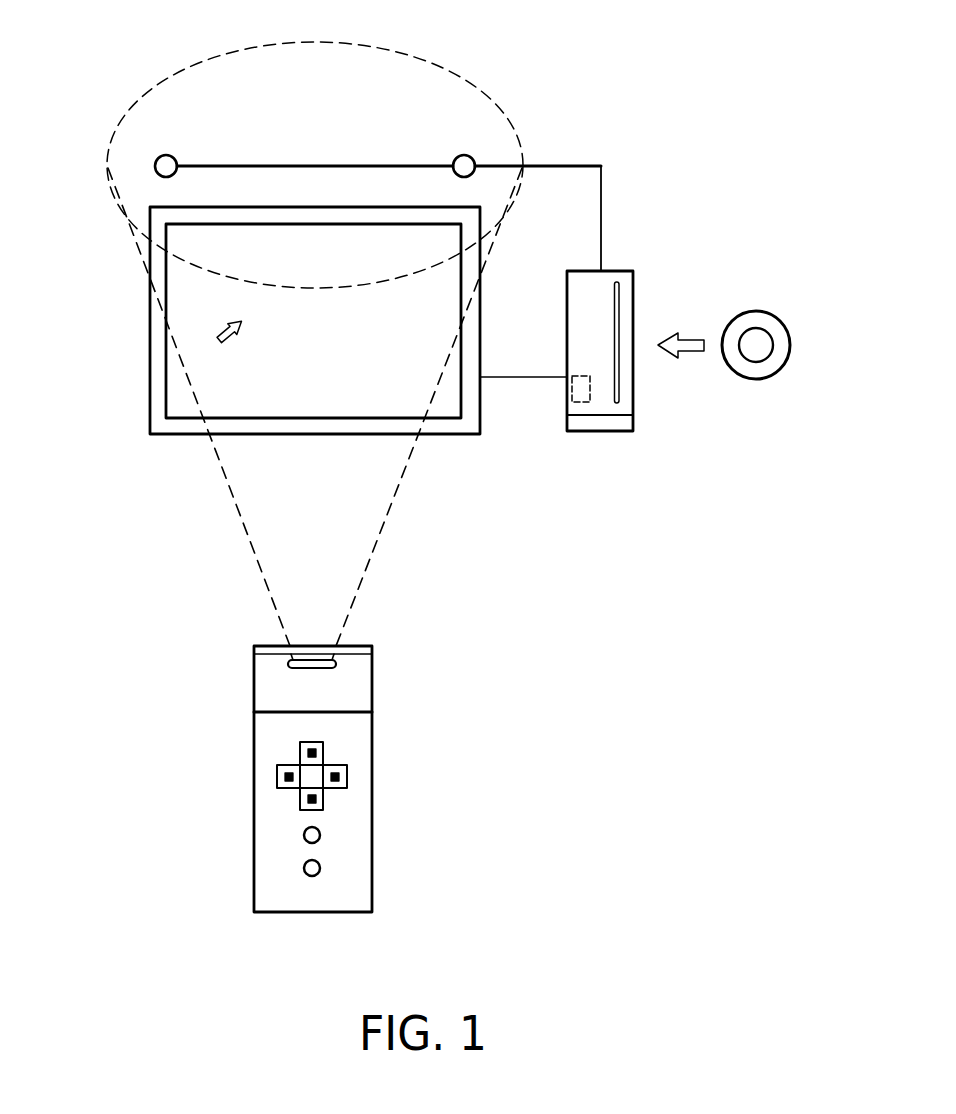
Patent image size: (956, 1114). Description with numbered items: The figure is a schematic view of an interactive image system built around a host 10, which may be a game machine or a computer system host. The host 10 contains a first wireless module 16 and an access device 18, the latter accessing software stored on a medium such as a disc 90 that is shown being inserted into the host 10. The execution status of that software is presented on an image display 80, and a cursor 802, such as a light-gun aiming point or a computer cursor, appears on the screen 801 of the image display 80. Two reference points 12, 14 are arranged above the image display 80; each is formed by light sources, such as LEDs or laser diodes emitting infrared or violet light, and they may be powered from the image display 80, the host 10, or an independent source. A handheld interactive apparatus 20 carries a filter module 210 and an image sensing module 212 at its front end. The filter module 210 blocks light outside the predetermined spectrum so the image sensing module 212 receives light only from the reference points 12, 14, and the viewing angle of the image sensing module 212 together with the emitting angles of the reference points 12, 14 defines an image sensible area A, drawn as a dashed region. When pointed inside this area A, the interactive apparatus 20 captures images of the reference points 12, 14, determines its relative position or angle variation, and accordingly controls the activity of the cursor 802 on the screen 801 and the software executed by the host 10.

The image sensible area A is at (410, 53).
The host 10 is at (615, 271).
The reference point 12 is at (157, 161).
The reference point 14 is at (474, 158).
The first wireless module 16 is at (572, 397).
The access device 18 is at (619, 388).
The interactive apparatus 20 is at (254, 678).
The image display 80 is at (150, 352).
The screen 801 is at (166, 396).
The cursor 802 is at (219, 332).
The disc 90 is at (790, 343).
The filter module 210 is at (365, 651).
The image sensing module 212 is at (318, 669).